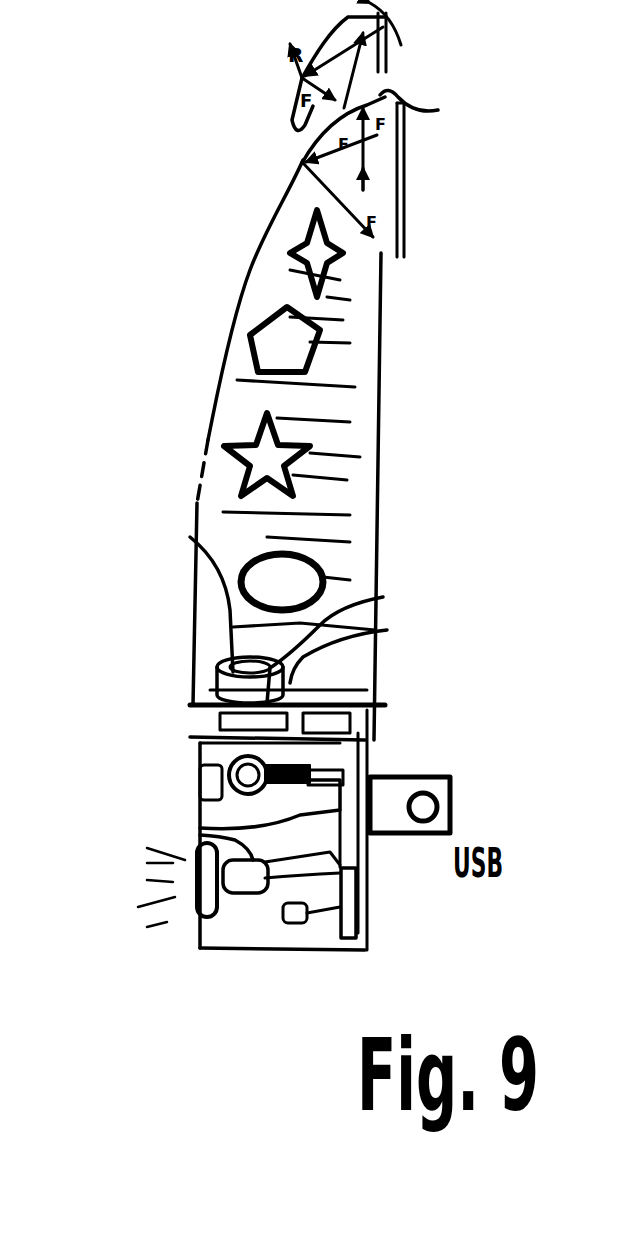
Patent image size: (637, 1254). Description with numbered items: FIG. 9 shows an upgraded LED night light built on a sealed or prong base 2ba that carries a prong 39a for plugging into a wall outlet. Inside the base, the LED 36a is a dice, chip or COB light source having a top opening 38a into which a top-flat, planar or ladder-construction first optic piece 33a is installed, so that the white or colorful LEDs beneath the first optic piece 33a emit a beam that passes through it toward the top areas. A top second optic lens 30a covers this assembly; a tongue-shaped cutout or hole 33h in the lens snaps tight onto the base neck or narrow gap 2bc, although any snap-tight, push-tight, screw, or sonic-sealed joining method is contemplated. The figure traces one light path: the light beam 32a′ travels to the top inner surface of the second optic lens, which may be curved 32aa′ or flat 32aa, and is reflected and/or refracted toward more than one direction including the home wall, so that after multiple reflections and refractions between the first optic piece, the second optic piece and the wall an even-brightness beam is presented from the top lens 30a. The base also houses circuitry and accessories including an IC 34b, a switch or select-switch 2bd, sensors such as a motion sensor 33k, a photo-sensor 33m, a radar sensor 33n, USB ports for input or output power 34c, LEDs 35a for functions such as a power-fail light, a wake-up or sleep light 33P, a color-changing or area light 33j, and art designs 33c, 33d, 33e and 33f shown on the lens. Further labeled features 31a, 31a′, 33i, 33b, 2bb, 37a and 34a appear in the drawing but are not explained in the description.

The flat inner surface of second optic lens 32aa is at (372, 55).
The curved inner surface of second optic lens 32aa′ is at (292, 120).
The light beam 32a′ is at (372, 178).
The side wall edge 31a′ is at (460, 258).
The second optic lens 30a is at (262, 260).
The side wall 31a is at (382, 282).
The printed lines 33i is at (363, 438).
The art design 33f is at (307, 242).
The art design 33e is at (253, 337).
The color changing or areas light 33j is at (246, 362).
The art design 33d is at (253, 433).
The wake-up or sleep light 33P is at (243, 437).
The art design 33c is at (273, 577).
The strap 2bb is at (187, 596).
The LED 36a is at (210, 737).
The base neck or narrow gap 2bc is at (348, 636).
The tongue shape cutout or hole 33h is at (365, 650).
The bag edge 33b is at (193, 683).
The first optic piece 33a is at (306, 697).
The top opening 38a is at (362, 720).
The switch 2bd is at (200, 762).
The motion sensor 33k is at (200, 797).
The IC 34b is at (231, 836).
The prong 39a is at (437, 800).
The LEDs 35a is at (155, 884).
The USB ports for input or output power 34c is at (357, 852).
The photo-sensor 33m is at (283, 915).
The radar sensor 33n is at (343, 885).
The light guide 37a is at (197, 912).
The wiring 34a is at (340, 930).
The sealed or prong base 2ba is at (317, 943).